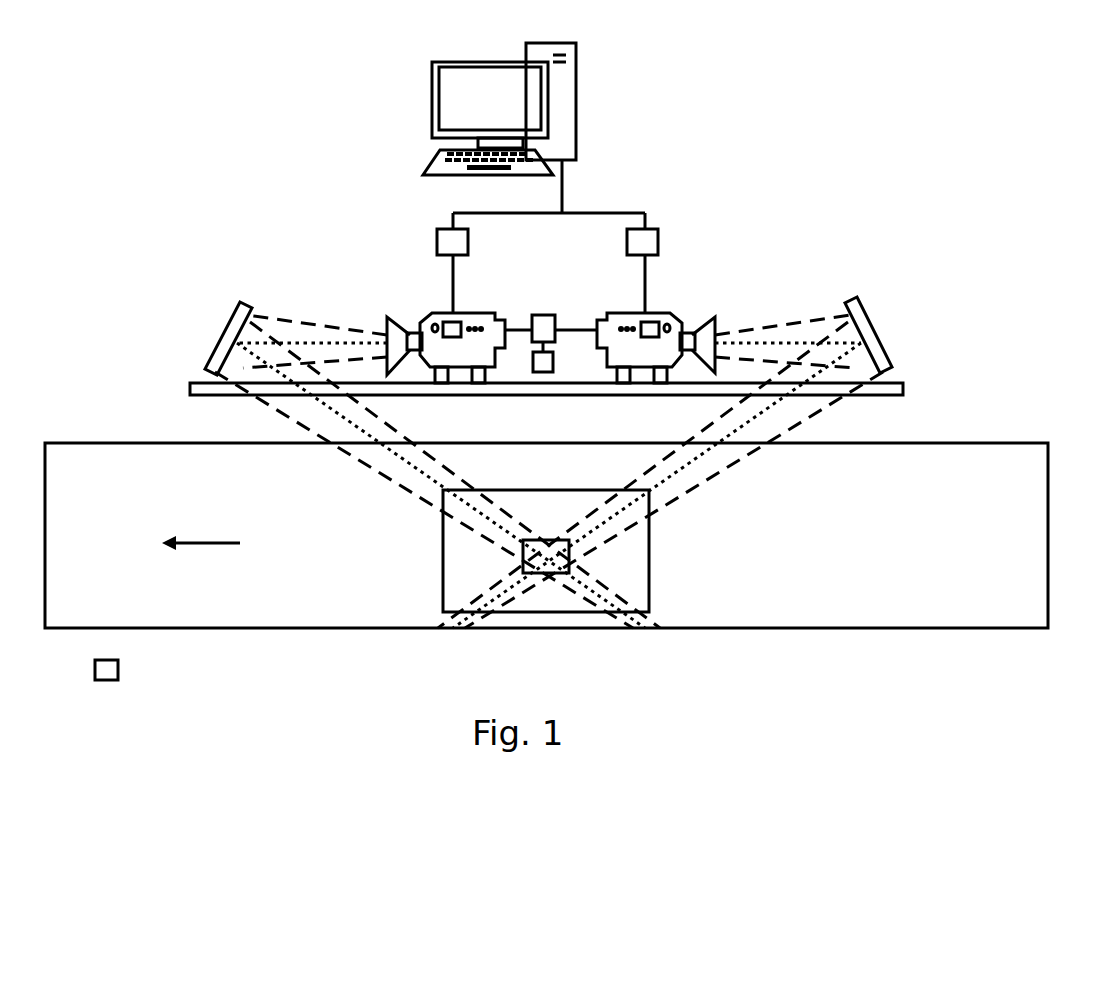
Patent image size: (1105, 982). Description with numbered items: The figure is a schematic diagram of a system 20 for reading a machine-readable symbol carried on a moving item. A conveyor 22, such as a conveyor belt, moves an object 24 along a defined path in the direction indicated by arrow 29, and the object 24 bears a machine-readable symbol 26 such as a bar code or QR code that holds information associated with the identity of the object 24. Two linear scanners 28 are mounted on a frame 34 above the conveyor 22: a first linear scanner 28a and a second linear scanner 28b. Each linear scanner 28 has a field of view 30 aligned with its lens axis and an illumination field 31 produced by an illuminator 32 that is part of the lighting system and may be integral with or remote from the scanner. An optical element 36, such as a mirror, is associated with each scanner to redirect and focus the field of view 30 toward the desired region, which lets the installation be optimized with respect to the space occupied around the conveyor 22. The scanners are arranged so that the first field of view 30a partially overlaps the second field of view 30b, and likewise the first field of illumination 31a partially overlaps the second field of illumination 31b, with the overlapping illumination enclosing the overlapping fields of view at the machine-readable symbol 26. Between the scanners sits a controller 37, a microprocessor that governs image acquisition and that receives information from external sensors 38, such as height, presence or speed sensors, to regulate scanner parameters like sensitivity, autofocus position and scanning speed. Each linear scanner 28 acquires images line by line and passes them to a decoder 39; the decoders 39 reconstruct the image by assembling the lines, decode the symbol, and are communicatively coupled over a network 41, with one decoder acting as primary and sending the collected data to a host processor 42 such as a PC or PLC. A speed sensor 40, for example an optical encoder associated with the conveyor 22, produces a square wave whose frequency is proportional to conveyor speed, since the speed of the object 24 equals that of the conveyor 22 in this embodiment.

The system 20 is at (1017, 373).
The conveyor 22 is at (927, 617).
The object 24 is at (650, 590).
The machine-readable symbol 26 is at (548, 548).
The linear scanner 28 is at (473, 312).
The first linear scanner 28a is at (460, 312).
The second linear scanner 28b is at (635, 313).
The arrow 29 is at (203, 543).
The field of view 30 is at (322, 343).
The first field of view 30a is at (320, 405).
The second field of view 30b is at (727, 438).
The illumination field 31 is at (337, 325).
The first field of illumination 31a is at (416, 437).
The second field of illumination 31b is at (668, 460).
The illuminator 32 is at (415, 333).
The frame 34 is at (200, 383).
The optical element 36 is at (215, 345).
The controller 37 is at (548, 315).
The external sensor 38 is at (553, 363).
The decoder 39 is at (437, 232).
The speed sensor 40 is at (118, 672).
The network 41 is at (600, 212).
The host processor 42 is at (573, 93).